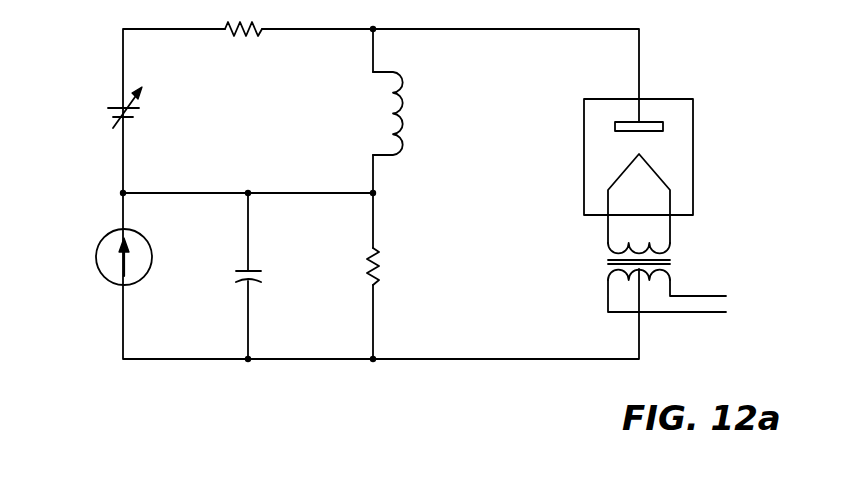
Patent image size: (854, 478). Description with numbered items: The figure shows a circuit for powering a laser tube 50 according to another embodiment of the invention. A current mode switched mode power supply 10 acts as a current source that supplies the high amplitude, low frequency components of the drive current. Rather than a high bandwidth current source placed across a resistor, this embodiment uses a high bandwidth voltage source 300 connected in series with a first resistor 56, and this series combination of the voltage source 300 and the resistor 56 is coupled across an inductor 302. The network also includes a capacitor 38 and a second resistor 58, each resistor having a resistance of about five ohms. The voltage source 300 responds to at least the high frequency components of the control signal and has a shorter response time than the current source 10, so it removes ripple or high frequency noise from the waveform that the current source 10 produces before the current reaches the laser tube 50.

The current mode switched mode power supply 10 is at (100, 273).
The high bandwidth voltage source 300 is at (103, 113).
The first resistor 56 is at (238, 37).
The inductor 302 is at (414, 118).
The capacitor 38 is at (265, 281).
The second resistor 58 is at (383, 272).
The laser tube 50 is at (694, 161).